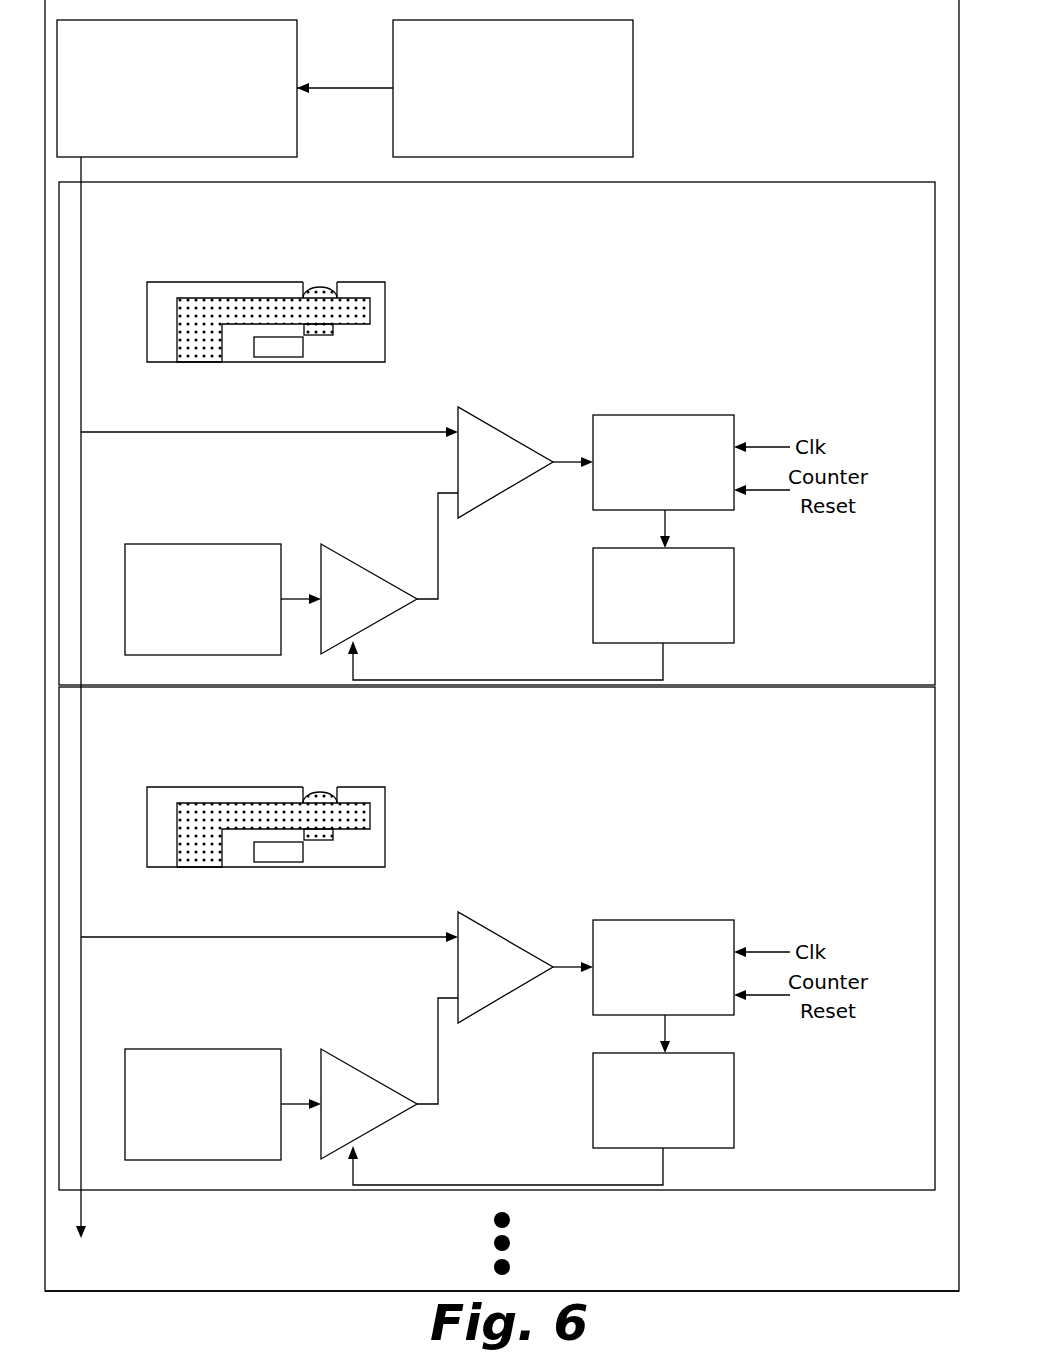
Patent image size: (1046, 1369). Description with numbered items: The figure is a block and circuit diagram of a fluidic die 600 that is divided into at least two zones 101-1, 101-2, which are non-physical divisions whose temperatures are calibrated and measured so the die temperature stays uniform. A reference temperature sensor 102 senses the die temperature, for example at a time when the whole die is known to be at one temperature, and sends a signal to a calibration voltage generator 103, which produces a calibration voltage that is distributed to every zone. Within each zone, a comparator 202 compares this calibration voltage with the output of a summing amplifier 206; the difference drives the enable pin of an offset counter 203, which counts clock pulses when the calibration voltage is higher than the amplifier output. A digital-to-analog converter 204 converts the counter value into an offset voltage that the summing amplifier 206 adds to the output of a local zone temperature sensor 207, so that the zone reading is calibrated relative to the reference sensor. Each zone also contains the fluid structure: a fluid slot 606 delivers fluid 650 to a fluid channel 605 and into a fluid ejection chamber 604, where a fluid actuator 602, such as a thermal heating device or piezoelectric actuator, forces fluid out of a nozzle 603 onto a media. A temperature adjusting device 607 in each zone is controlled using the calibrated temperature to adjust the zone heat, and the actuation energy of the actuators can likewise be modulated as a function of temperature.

The calibration voltage generator 103 is at (158, 126).
The reference temperature sensor 102 is at (494, 127).
The zone 101-1 is at (469, 254).
The zone 101-2 is at (469, 759).
The fluid 650 is at (188, 308).
The nozzle 603 is at (318, 270).
The fluid ejection chamber 604 is at (330, 310).
The fluid channel 605 is at (262, 306).
The fluid slot 606 is at (208, 352).
The fluid actuator 602 is at (336, 333).
The temperature adjusting device 607 is at (303, 347).
The comparator 202 is at (485, 472).
The offset counter 203 is at (646, 501).
The digital-to-analog converter 204 is at (646, 619).
The summing amplifier 206 is at (348, 610).
The zone temperature sensor 207 is at (184, 650).
The fluidic die 600 is at (256, 1306).